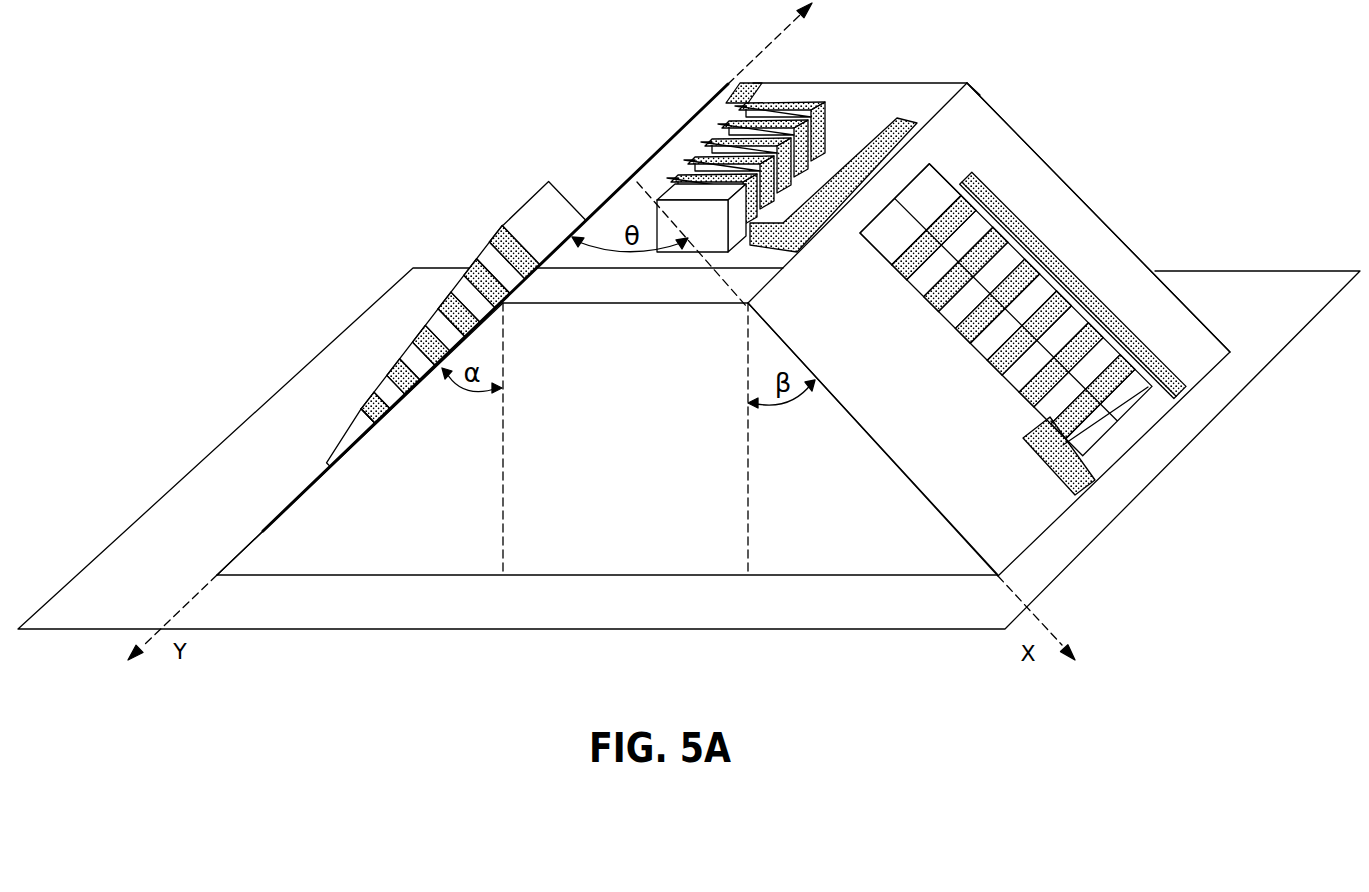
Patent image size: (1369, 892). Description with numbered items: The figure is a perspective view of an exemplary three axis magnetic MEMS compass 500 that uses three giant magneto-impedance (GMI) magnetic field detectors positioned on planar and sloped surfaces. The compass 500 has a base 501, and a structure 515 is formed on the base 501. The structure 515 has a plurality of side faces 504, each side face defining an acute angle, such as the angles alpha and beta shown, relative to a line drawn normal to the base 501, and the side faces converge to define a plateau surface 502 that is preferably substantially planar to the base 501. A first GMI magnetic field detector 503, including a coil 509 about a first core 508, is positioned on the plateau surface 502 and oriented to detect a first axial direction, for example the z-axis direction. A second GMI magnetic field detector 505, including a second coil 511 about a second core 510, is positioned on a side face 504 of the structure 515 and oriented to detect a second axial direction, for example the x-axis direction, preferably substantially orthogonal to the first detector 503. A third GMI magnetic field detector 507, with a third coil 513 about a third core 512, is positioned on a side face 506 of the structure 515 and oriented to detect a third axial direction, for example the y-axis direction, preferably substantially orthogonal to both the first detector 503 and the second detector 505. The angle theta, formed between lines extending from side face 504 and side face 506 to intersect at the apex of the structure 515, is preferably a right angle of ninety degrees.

The three axis magnetic MEMS compass 500 is at (318, 198).
The base 501 is at (1252, 283).
The plateau surface 502 is at (989, 299).
The first GMI magnetic field detector 503 is at (706, 128).
The side face 504 is at (1080, 217).
The second GMI magnetic field detector 505 is at (873, 252).
The side face 506 is at (236, 553).
The third GMI magnetic field detector 507 is at (472, 329).
The first core 508 is at (687, 213).
The coil 509 is at (834, 127).
The second core 510 is at (925, 208).
The second coil 511 is at (952, 339).
The third core 512 is at (537, 200).
The third coil 513 is at (422, 325).
The structure 515 is at (990, 78).